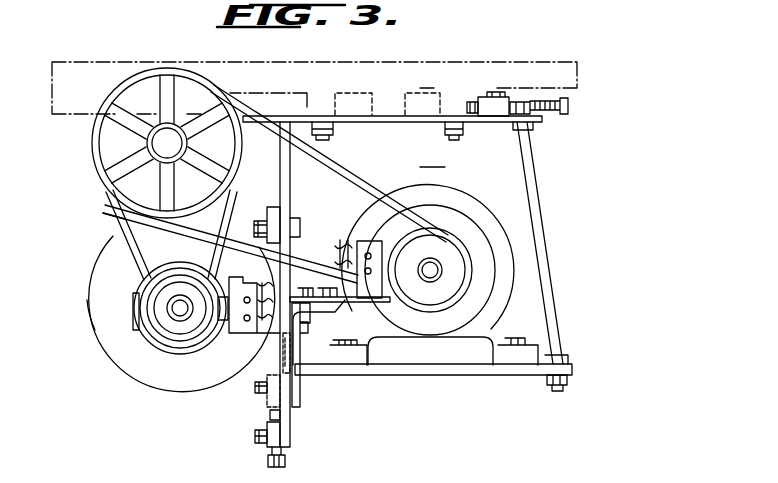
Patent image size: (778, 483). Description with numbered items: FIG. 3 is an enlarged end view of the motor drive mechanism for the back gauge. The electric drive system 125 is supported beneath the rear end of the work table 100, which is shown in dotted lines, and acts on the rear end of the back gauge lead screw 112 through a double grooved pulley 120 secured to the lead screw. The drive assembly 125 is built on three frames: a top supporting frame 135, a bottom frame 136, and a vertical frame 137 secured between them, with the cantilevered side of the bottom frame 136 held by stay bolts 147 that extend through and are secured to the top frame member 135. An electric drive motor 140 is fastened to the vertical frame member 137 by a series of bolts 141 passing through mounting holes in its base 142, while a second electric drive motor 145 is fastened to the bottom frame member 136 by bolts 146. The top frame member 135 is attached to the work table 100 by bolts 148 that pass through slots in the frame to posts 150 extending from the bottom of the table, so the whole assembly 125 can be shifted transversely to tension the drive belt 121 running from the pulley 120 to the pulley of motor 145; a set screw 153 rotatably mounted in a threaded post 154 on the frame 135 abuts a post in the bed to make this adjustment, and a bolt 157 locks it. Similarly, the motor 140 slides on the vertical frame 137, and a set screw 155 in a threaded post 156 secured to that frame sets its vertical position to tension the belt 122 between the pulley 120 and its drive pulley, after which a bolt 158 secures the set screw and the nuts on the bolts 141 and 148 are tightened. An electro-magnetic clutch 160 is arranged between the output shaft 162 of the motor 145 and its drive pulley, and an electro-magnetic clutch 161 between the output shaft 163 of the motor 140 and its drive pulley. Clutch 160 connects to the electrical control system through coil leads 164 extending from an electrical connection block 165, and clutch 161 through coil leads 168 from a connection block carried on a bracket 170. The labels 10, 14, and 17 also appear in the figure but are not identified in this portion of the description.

The apparatus 10 is at (108, 350).
The arm 14 is at (118, 223).
The link bar 17 is at (326, 265).
The work table 100 is at (535, 62).
The back gauge lead screw 112 is at (158, 142).
The double grooved pulley 120 is at (85, 153).
The drive belt 121 is at (347, 170).
The belt 122 is at (113, 198).
The electric drive system 125 is at (432, 158).
The supporting frame 135 is at (475, 122).
The bottom frame 136 is at (433, 386).
The vertical frame 137 is at (290, 195).
The electric drive motor 140 is at (136, 381).
The bolts 141 is at (254, 222).
The base 142 is at (272, 358).
The electric drive motor 145 is at (486, 197).
The bolts 146 is at (341, 341).
The stay bolts 147 is at (555, 248).
The bolts 148 is at (338, 137).
The posts 150 is at (329, 105).
The set screw 153 is at (552, 109).
The threaded post 154 is at (472, 101).
The set screw 155 is at (284, 453).
The threaded post 156 is at (270, 444).
The bolt 157 is at (498, 96).
The bolt 158 is at (254, 437).
The electro-magnetic clutch 160 is at (433, 329).
The electro-magnetic clutch 161 is at (126, 325).
The output shaft 162 is at (428, 280).
The output shaft 163 is at (180, 316).
The coil leads 164 is at (346, 246).
The electrical connection block 165 is at (414, 241).
The coil leads 168 is at (262, 280).
The bracket 170 is at (257, 333).